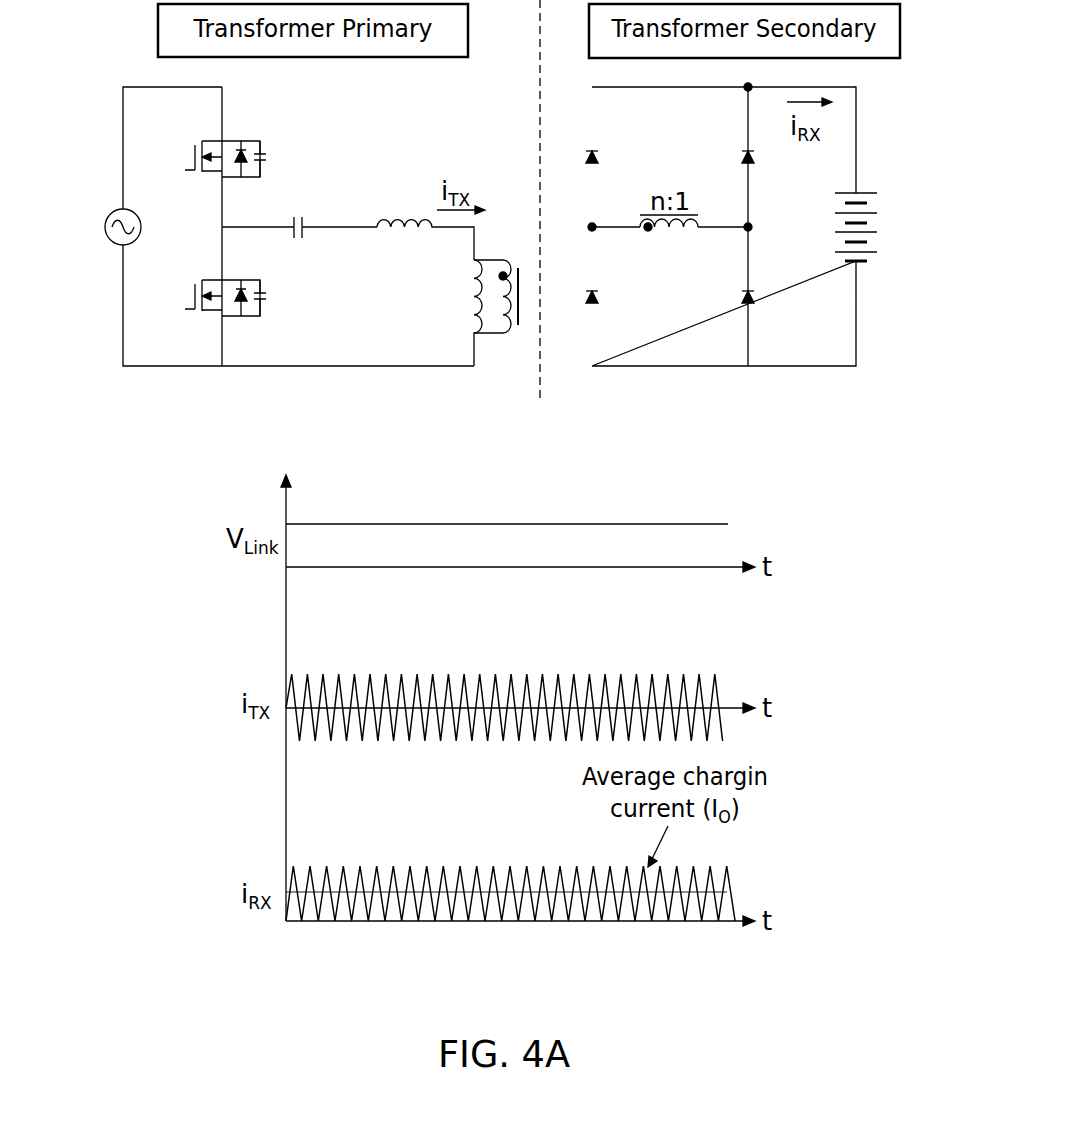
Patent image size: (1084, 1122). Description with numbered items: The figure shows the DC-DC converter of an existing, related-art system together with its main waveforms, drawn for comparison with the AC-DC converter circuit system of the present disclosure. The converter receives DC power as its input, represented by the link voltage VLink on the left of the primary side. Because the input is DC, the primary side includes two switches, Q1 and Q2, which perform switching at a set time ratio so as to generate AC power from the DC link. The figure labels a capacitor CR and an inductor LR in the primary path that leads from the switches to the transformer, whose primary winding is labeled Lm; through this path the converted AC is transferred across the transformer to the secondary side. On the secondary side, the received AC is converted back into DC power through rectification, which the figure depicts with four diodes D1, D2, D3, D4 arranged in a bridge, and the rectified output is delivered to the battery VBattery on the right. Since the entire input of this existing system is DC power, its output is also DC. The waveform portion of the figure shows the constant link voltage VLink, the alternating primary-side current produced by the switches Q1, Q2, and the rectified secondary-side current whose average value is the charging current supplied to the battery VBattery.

The first primary-side switch (MOSFET Q1) Q1 is at (208, 157).
The second primary-side switch (MOSFET Q2) Q2 is at (208, 296).
The resonant capacitor CR is at (329, 210).
The resonant inductor LR is at (425, 222).
The transformer magnetizing inductance / primary winding Lm is at (477, 313).
The rectifier diode D1 is at (575, 159).
The rectifier diode D2 is at (575, 299).
The rectifier diode D3 is at (731, 299).
The rectifier diode D4 is at (731, 159).
The DC link voltage source VLink is at (260, 226).
The battery VBattery is at (897, 233).